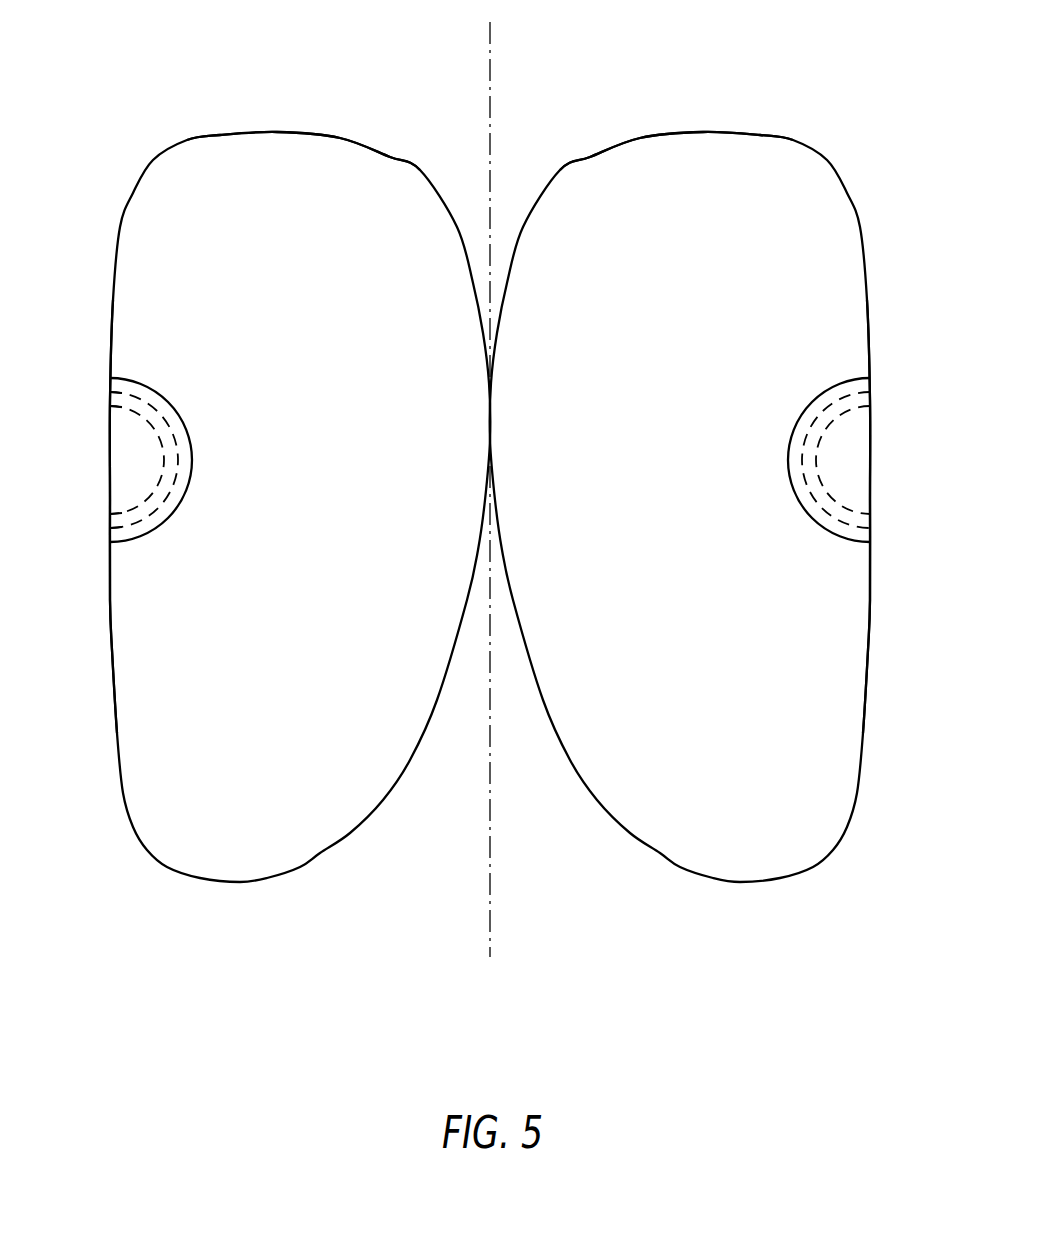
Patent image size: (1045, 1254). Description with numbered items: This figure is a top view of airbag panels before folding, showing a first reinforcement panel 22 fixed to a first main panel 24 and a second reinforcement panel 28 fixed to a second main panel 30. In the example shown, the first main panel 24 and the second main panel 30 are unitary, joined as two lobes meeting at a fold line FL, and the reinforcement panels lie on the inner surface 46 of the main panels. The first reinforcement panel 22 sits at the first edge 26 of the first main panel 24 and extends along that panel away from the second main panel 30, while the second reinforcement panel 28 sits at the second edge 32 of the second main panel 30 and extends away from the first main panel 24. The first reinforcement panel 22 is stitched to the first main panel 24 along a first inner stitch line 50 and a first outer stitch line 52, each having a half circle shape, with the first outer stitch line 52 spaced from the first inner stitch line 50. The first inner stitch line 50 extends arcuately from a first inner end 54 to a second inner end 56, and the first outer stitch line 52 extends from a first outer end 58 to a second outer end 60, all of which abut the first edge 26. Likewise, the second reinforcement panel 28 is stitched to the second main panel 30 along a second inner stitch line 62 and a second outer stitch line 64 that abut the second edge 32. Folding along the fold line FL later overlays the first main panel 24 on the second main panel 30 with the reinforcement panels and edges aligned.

The fold line FL is at (490, 53).
The first reinforcement panel 22 is at (127, 455).
The first main panel 24 is at (210, 170).
The first edge 26 is at (109, 323).
The second reinforcement panel 28 is at (853, 455).
The second main panel 30 is at (650, 170).
The second edge 32 is at (872, 322).
The inner surface 46 is at (330, 170).
The first inner stitch line 50 is at (147, 500).
The first outer stitch line 52 is at (160, 503).
The first inner end 54 is at (117, 405).
The second inner end 56 is at (113, 517).
The first outer end 58 is at (110, 388).
The second outer end 60 is at (110, 530).
The second inner stitch line 62 is at (835, 500).
The second outer stitch line 64 is at (820, 503).